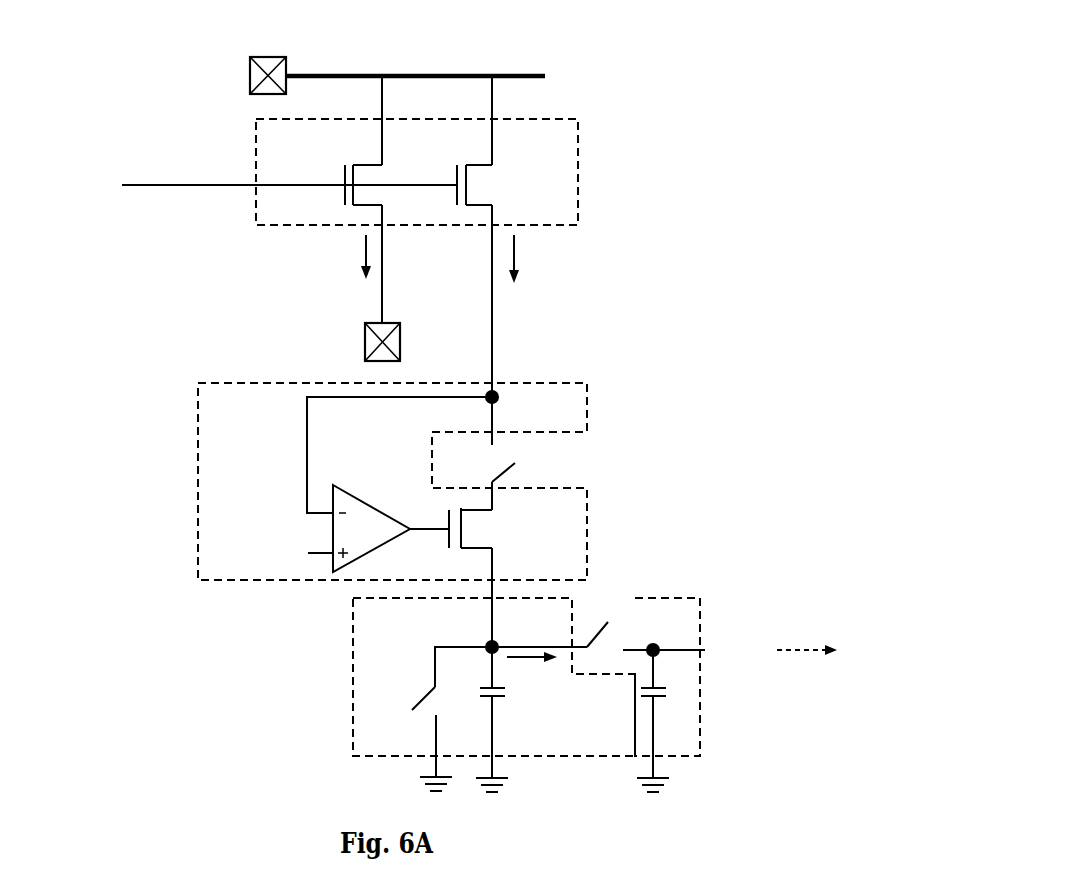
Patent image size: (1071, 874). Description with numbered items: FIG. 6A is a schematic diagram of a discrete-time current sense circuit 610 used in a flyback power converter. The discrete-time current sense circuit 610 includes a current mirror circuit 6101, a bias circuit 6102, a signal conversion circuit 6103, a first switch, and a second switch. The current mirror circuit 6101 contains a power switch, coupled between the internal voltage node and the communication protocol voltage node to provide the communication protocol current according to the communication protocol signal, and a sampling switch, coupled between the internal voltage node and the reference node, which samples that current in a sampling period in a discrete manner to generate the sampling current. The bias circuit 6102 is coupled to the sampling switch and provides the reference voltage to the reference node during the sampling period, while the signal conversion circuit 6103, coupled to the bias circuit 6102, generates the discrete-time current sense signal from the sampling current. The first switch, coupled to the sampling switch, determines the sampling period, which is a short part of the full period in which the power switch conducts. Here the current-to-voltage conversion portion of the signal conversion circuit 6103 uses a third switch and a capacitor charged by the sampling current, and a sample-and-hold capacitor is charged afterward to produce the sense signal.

The discrete-time current sense circuit 610 is at (701, 62).
The current mirror circuit 6101 is at (580, 146).
The bias circuit 6102 is at (392, 515).
The signal conversion circuit 6103 is at (529, 696).